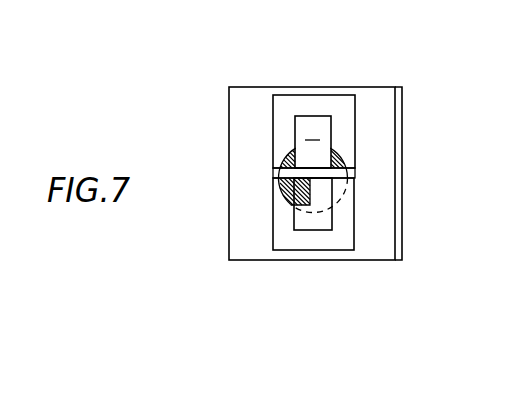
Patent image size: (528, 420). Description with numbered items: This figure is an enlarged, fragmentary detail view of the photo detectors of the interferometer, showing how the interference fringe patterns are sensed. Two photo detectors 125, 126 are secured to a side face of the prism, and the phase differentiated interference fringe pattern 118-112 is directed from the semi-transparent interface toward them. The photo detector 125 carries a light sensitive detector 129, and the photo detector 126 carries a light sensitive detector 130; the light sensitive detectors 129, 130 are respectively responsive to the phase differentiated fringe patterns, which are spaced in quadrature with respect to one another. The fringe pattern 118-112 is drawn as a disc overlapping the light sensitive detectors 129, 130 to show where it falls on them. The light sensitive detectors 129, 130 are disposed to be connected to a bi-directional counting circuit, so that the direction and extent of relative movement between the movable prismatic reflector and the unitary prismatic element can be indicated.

The photo detector 125 is at (322, 108).
The light sensitive detector 129 is at (305, 122).
The photo detector 126 is at (343, 212).
The light sensitive detector 130 is at (320, 222).
The interference fringe pattern 118-112 is at (352, 157).